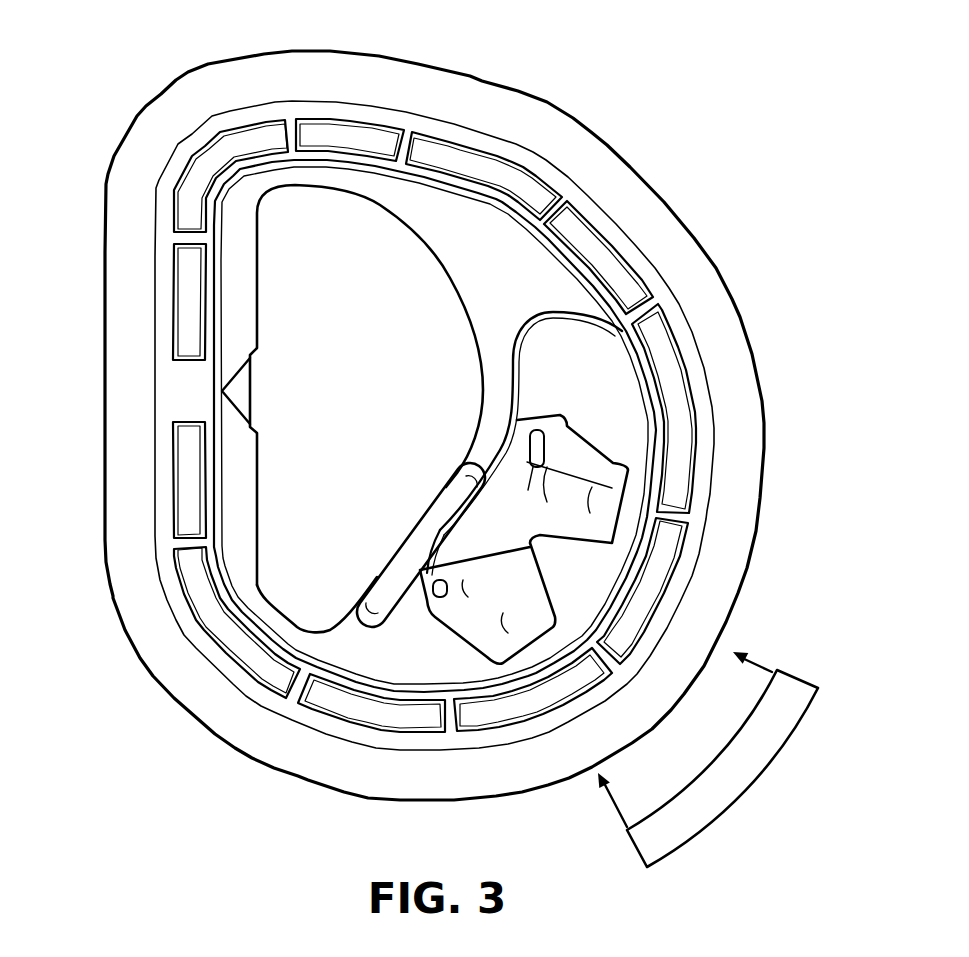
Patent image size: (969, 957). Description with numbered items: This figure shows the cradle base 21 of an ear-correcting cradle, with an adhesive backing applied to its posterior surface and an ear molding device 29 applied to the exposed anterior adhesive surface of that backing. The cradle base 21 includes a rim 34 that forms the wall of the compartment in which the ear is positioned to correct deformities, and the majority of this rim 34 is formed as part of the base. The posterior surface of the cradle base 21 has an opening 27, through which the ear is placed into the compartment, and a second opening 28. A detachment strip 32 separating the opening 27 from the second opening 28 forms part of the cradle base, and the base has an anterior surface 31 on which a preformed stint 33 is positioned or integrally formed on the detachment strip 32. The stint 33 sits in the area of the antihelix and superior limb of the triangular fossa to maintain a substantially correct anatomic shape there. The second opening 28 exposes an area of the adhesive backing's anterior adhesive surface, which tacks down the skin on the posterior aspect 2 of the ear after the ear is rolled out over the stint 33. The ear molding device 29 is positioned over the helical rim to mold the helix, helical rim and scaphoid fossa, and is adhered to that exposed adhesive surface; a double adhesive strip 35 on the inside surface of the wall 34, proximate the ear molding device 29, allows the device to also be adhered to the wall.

The posterior aspect 2 is at (422, 210).
The cradle base 21 is at (505, 106).
The opening 27 is at (281, 226).
The second opening 28 is at (572, 340).
The ear molding device 29 is at (617, 460).
The anterior surface 31 is at (533, 278).
The detachment strip 32 is at (493, 423).
The preformed stint 33 is at (385, 579).
The rim 34 is at (683, 557).
The double adhesive strip 35 is at (797, 737).